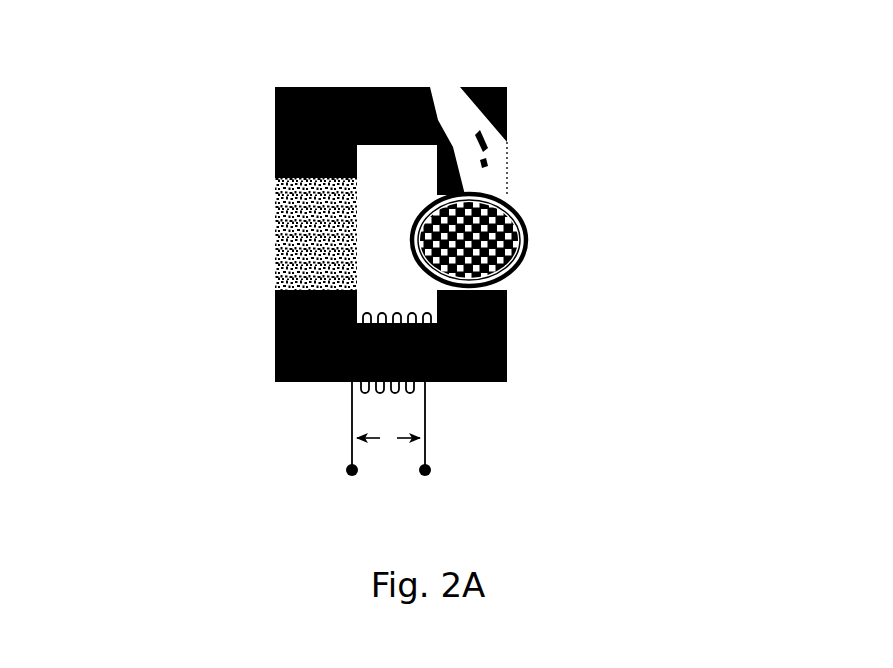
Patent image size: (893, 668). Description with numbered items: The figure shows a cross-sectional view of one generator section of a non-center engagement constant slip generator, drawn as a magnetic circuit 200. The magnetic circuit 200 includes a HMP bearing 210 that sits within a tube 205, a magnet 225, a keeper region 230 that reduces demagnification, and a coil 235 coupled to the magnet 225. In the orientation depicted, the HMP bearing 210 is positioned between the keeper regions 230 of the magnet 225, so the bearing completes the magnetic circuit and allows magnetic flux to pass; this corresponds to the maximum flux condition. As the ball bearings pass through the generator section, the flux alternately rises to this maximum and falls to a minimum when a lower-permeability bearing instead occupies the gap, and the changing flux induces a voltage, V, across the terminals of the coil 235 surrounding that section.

The magnetic circuit 200 is at (443, 48).
The tube 205 is at (532, 245).
The HMP bearing 210 is at (510, 220).
The magnet 225 is at (262, 233).
The keeper region 230 is at (263, 120).
The coil 235 is at (343, 393).